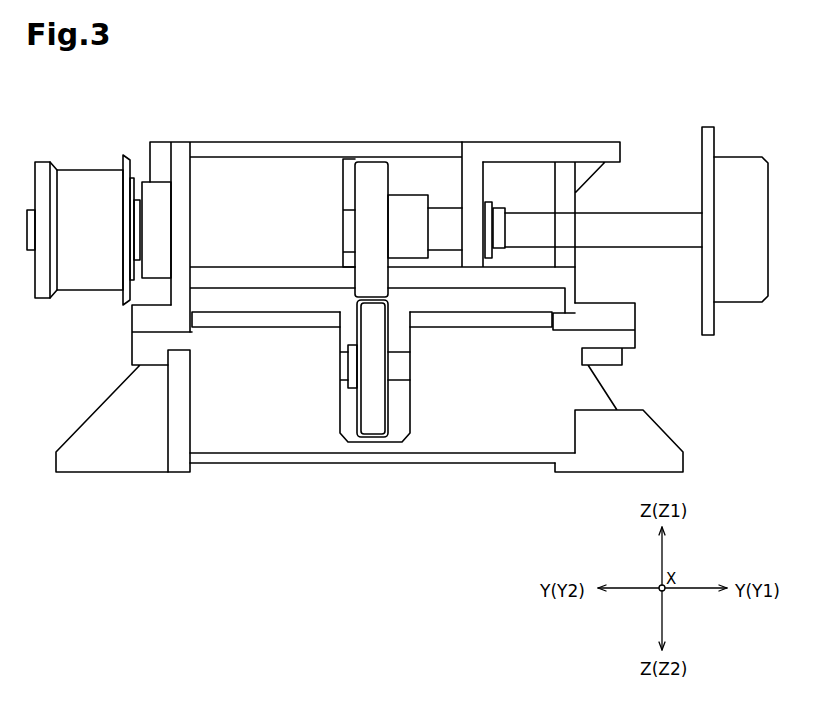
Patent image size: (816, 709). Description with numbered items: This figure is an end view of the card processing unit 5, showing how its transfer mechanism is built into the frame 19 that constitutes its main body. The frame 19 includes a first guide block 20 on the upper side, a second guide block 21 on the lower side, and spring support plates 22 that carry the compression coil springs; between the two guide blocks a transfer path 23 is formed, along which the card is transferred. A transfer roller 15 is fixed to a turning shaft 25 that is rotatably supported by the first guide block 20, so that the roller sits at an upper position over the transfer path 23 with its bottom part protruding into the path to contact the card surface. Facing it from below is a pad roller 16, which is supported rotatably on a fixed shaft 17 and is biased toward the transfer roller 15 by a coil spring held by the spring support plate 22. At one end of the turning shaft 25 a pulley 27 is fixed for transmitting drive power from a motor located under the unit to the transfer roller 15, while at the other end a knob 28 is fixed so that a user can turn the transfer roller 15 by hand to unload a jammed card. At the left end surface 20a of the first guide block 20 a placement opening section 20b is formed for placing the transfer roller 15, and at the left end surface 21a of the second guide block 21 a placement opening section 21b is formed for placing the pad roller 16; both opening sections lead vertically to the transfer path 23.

The card processing unit 5 is at (430, 98).
The transfer roller 15 is at (390, 178).
The pad roller 16 is at (357, 407).
The fixed shaft 17 is at (392, 380).
The frame 19 is at (566, 141).
The first guide block 20 is at (248, 141).
The left end surface of the first guide block 20a is at (279, 219).
The placement opening section 20b is at (349, 158).
The second guide block 21 is at (132, 348).
The left end surface of the second guide block 21a is at (245, 402).
The placement opening section 21b is at (398, 417).
The spring support plate 22 is at (287, 464).
The transfer path 23 is at (279, 307).
The turning shaft 25 is at (652, 212).
The pulley 27 is at (88, 168).
The knob 28 is at (742, 157).